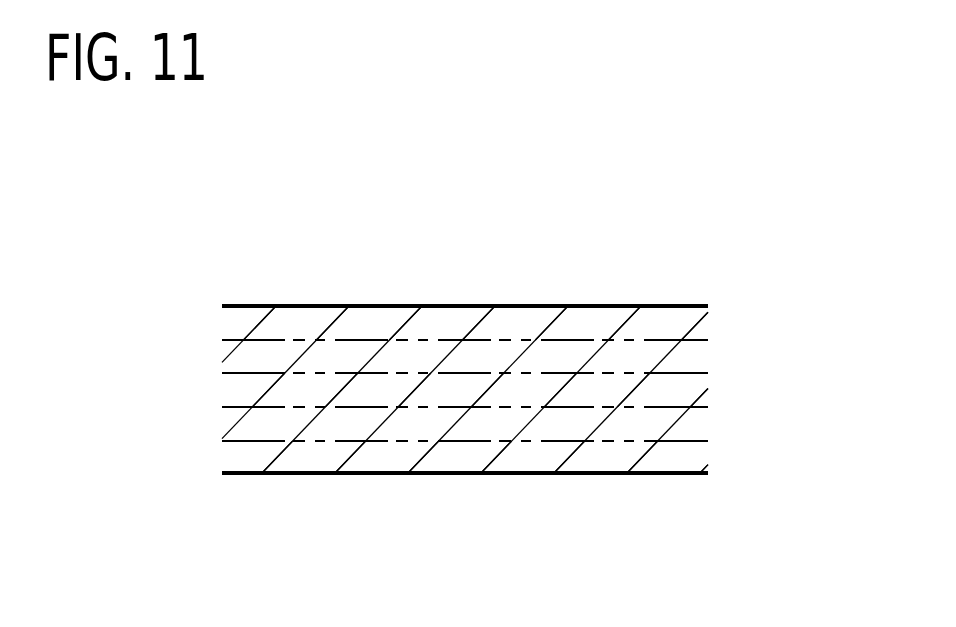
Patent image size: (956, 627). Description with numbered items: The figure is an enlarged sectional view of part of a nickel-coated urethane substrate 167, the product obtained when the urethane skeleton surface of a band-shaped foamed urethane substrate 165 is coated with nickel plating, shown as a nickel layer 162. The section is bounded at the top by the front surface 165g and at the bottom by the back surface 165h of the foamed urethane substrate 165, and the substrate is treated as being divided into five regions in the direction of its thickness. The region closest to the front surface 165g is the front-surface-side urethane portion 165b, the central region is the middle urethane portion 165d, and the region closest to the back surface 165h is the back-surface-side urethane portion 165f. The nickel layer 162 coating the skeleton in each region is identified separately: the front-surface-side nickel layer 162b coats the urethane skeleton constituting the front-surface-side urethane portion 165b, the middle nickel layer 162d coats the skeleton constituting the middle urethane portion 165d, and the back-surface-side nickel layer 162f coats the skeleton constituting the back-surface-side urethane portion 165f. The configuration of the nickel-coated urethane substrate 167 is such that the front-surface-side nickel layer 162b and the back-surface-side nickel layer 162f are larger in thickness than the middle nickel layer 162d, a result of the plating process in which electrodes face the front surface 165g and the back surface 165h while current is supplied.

The nickel-coated urethane substrate 167 is at (471, 199).
The nickel layer 162 is at (330, 307).
The front-surface-side nickel layer 162b is at (410, 307).
The middle nickel layer 162d is at (660, 390).
The back-surface-side nickel layer 162f is at (415, 458).
The foamed urethane substrate 165 is at (338, 458).
The front-surface-side urethane portion 165b is at (727, 307).
The middle urethane portion 165d is at (727, 373).
The back-surface-side urethane portion 165f is at (727, 442).
The front surface 165g is at (555, 305).
The back surface 165h is at (587, 473).